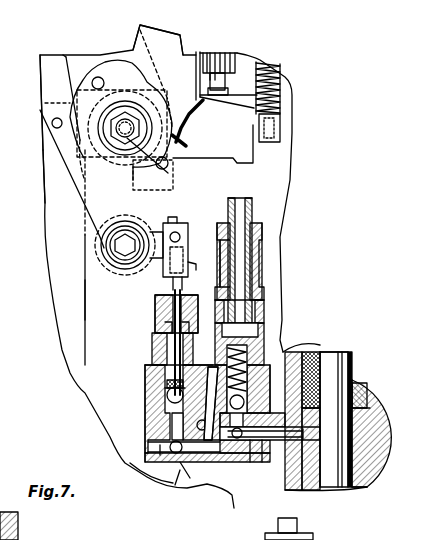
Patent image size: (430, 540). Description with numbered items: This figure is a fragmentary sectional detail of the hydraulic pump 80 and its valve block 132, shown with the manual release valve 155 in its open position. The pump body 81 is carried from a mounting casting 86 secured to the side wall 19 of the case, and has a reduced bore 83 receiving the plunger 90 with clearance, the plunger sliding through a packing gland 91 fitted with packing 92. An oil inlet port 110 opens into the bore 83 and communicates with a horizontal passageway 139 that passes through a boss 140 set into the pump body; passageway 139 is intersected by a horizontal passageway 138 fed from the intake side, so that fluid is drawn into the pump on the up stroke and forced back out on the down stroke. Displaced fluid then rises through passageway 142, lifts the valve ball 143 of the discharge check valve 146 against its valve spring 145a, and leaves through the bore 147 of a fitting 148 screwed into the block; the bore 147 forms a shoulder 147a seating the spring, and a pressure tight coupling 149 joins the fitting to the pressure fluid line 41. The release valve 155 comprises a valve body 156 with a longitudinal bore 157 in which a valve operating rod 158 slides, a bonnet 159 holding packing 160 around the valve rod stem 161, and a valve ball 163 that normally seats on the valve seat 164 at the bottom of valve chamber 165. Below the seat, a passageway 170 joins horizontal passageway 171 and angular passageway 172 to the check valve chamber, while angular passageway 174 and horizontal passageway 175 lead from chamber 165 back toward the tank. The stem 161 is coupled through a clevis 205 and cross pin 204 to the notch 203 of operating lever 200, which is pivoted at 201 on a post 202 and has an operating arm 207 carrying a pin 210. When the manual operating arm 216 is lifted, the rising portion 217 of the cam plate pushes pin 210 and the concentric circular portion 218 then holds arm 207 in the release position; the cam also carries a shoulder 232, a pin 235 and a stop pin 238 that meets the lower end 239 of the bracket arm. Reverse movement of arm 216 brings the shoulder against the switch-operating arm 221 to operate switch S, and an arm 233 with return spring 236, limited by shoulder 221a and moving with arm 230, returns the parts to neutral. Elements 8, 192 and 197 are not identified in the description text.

The section line 8 is at (176, 218).
The side wall 19 is at (295, 166).
The pressure fluid line 41 is at (252, 213).
The hydraulic pump 80 is at (384, 437).
The pump body 81 is at (370, 481).
The reduced bore 83 is at (365, 424).
The mounting casting 86 is at (90, 297).
The plunger 90 is at (340, 385).
The packing gland 91 is at (300, 364).
The packing 92 is at (312, 374).
The oil inlet port 110 is at (364, 470).
The valve block 132 is at (147, 378).
The horizontal passageway 138 is at (233, 463).
The horizontal passageway 139 is at (250, 460).
The boss 140 is at (283, 460).
The passageway 142 is at (228, 460).
The valve ball 143 is at (320, 352).
The valve spring 145a is at (262, 345).
The discharge check valve 146 is at (264, 360).
The bore 147 is at (264, 319).
The shoulder 147a is at (264, 332).
The fitting 148 is at (264, 306).
The pressure tight coupling 149 is at (222, 268).
The manual release valve 155 is at (148, 357).
The valve body 156 is at (160, 341).
The longitudinal bore 157 is at (156, 351).
The valve operating rod 158 is at (160, 327).
The bonnet 159 is at (160, 311).
The packing 160 is at (160, 298).
The valve rod stem 161 is at (176, 289).
The valve ball 163 is at (167, 399).
The valve seat 164 is at (178, 428).
The valve chamber 165 is at (196, 424).
The passageway 170 is at (208, 400).
The horizontal passageway 171 is at (163, 470).
The angular passageway 172 is at (190, 480).
The angular passageway 174 is at (170, 449).
The horizontal passageway 175 is at (178, 490).
The member 192 is at (20, 526).
The passage 197 is at (145, 478).
The operating lever 200 is at (75, 192).
The pivot 201 is at (128, 243).
The post 202 is at (101, 257).
The notch 203 is at (172, 216).
The cross pin 204 is at (180, 238).
The clevis 205 is at (182, 282).
The operating arm 207 is at (48, 70).
The pin 210 is at (52, 123).
The manual operating arm 216 is at (137, 38).
The rising portion 217 is at (44, 170).
The concentric circular portion 218 is at (45, 103).
The switch-operating arm 221 is at (204, 50).
The shoulder 221a is at (204, 106).
The arm 230 is at (193, 128).
The shoulder 232 is at (150, 70).
The arm 233 is at (238, 166).
The pin 235 is at (97, 77).
The return spring 236 is at (281, 91).
The stop pin 238 is at (172, 172).
The lower end 239 is at (137, 175).
The switch S is at (236, 80).